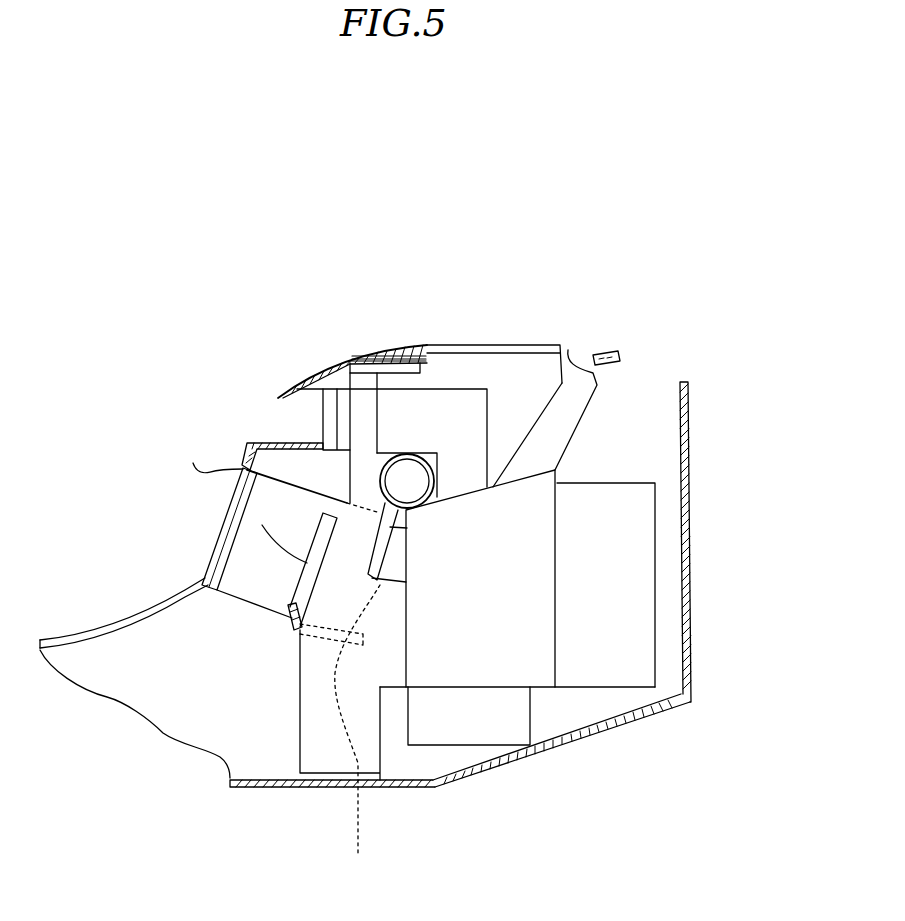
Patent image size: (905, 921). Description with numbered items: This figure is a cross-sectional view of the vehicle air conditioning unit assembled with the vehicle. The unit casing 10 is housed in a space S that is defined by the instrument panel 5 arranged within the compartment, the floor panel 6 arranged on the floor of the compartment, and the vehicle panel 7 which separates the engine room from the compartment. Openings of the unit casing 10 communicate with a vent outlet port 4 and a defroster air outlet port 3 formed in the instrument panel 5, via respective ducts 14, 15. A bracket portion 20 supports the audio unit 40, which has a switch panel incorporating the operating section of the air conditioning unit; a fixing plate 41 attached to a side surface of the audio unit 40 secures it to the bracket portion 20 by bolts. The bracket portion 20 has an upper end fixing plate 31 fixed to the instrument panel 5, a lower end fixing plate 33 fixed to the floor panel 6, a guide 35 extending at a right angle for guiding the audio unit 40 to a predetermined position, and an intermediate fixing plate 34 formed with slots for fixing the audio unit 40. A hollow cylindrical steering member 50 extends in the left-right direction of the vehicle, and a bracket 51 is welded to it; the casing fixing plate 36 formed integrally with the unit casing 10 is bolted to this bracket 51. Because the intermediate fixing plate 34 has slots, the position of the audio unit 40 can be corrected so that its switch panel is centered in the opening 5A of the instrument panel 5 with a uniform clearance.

The vent outlet port 4 is at (307, 400).
The upper end fixing plate 31 is at (390, 343).
The instrument panel 5 is at (468, 343).
The duct 14 is at (453, 362).
The steering member 50 is at (483, 365).
The defroster air outlet port 3 is at (568, 352).
The duct 15 is at (583, 418).
The opening 5A is at (193, 463).
The fixing plate 41 is at (228, 497).
The audio unit 40 is at (195, 562).
The bracket 51 is at (345, 505).
The intermediate fixing plate 34 is at (287, 620).
The casing fixing plate 36 is at (340, 515).
The bracket portion 20 is at (270, 718).
The guide 35 is at (340, 738).
The lower end fixing plate 33 is at (317, 792).
The floor panel 6 is at (400, 788).
The vehicle panel 7 is at (688, 528).
The space S is at (650, 462).
The unit casing 10 is at (552, 705).